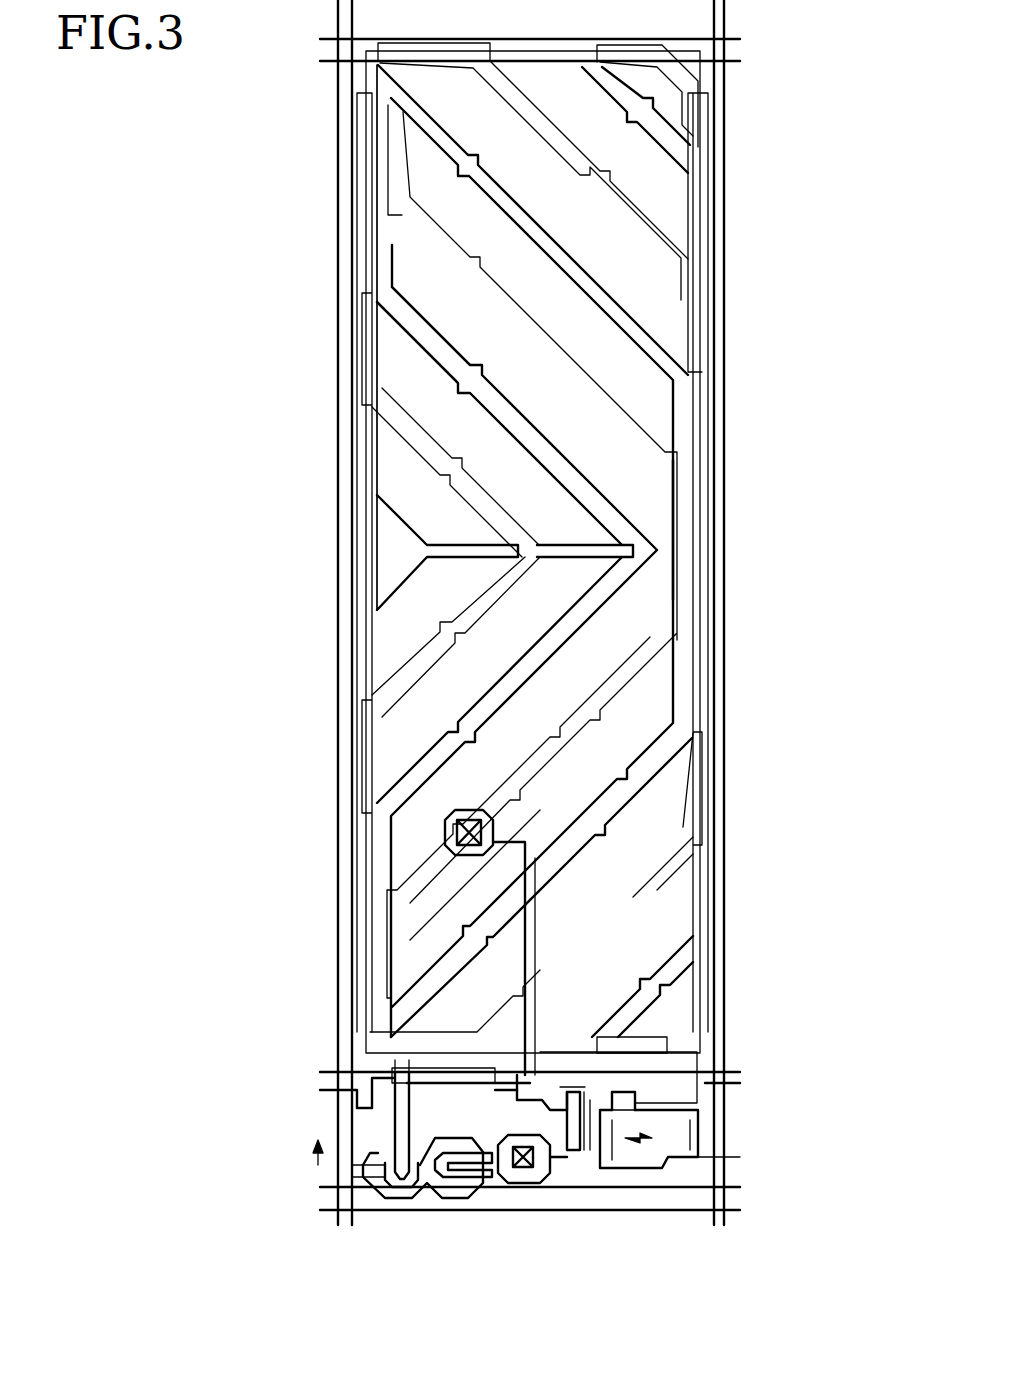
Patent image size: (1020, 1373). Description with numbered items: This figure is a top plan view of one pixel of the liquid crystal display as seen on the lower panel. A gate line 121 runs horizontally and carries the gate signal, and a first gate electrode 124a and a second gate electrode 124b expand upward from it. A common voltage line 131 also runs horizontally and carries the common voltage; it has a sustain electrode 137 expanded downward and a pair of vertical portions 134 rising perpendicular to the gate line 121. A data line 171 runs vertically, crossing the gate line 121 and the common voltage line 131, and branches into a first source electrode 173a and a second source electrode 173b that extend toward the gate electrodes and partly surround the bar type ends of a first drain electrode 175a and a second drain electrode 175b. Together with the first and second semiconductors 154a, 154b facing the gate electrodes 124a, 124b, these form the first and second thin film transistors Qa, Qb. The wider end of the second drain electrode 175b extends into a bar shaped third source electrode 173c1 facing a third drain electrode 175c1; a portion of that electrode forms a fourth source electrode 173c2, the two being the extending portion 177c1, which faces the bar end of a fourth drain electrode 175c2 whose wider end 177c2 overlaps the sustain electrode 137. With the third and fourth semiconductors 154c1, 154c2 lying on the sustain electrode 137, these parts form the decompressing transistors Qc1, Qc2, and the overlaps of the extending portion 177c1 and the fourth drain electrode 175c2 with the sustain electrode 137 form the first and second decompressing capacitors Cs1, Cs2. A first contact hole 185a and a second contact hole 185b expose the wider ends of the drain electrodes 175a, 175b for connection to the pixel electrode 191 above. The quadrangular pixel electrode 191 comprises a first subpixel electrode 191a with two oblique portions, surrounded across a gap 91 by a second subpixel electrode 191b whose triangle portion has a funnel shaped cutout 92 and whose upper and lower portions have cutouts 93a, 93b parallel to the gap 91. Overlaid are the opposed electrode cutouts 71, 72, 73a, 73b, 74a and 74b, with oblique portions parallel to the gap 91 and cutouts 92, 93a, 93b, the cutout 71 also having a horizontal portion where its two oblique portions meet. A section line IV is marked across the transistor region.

The data line 171 is at (338, 140).
The gate line 121 is at (740, 1205).
The common voltage line 131 is at (340, 1072).
The vertical portions 134 is at (357, 437).
The pixel electrode 191 is at (222, 742).
The first subpixel electrode 191a is at (470, 700).
The second subpixel electrode 191b is at (465, 960).
The gap 91 is at (430, 360).
The cutout portion 92 is at (380, 530).
The cutout portion 71 is at (640, 550).
The cutout portion 72 is at (676, 600).
The cutout portion 74a is at (660, 52).
The cutout portion 74b is at (700, 1045).
The upper cutout portion 93a is at (660, 110).
The lower cutout portion 93b is at (700, 975).
The cutout portion 73a is at (700, 235).
The cutout portion 73b is at (690, 880).
The first contact hole 185a is at (485, 830).
The second contact hole 185b is at (522, 1170).
The first drain electrode 175a is at (360, 1095).
The second drain electrode 175b is at (468, 1182).
The third drain electrode 175c1 is at (572, 1095).
The fourth drain electrode 175c2 is at (605, 1150).
The first gate electrode 124a is at (385, 1170).
The second gate electrode 124b is at (398, 1085).
The first source electrode 173a is at (365, 1182).
The second source electrode 173b is at (400, 1075).
The third source electrode 173c1 is at (562, 1118).
The fourth source electrode 173c2 is at (626, 1095).
The first semiconductor 154a is at (365, 1160).
The second semiconductor 154b is at (480, 1192).
The third semiconductor 154c1 is at (578, 1142).
The fourth semiconductor 154c2 is at (690, 1100).
The extending portion 177c1 is at (656, 893).
The wider end of fourth drain electrode 177c2 is at (700, 1140).
The sustain electrode 137 is at (690, 1162).
The first decompressing capacitor Cs1 is at (703, 1077).
The second decompressing capacitor Cs2 is at (699, 1155).
The first thin film transistor Qa is at (398, 1200).
The second thin film transistor Qb is at (452, 1200).
The third thin film transistor Qc1 is at (567, 1087).
The fourth thin film transistor Qc2 is at (630, 1087).
The section line IV is at (477, 1148).